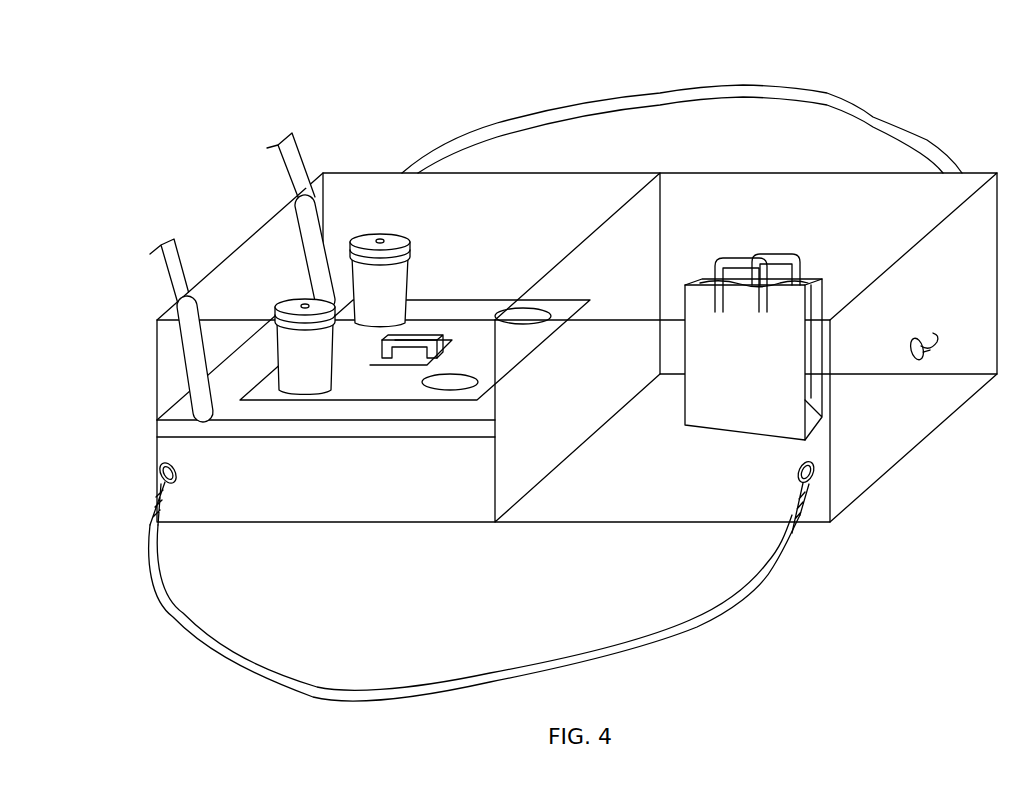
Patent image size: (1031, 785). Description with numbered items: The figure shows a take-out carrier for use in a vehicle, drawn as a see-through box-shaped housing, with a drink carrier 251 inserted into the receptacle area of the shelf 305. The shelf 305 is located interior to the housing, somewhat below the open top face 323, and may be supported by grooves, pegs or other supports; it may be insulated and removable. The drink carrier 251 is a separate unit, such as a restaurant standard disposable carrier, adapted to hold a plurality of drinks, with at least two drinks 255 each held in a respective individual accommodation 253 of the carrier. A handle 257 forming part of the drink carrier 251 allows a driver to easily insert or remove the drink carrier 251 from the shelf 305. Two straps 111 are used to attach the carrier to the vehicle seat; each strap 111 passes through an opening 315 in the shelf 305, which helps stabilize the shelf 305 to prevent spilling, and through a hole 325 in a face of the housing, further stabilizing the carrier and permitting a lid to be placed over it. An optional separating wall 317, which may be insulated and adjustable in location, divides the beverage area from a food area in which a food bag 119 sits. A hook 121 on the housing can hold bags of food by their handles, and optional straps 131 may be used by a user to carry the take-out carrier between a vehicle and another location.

The strap 111 is at (196, 277).
The food bag 119 is at (778, 292).
The hook 121 is at (927, 350).
The strap 131 is at (873, 102).
The drink carrier 251 is at (455, 302).
The individual accommodation 253 is at (297, 392).
The drink 255 is at (313, 312).
The handle 257 is at (412, 356).
The shelf 305 is at (235, 412).
The opening 315 is at (308, 292).
The separating wall 317 is at (560, 388).
The top face 323 is at (930, 190).
The hole 325 is at (297, 220).